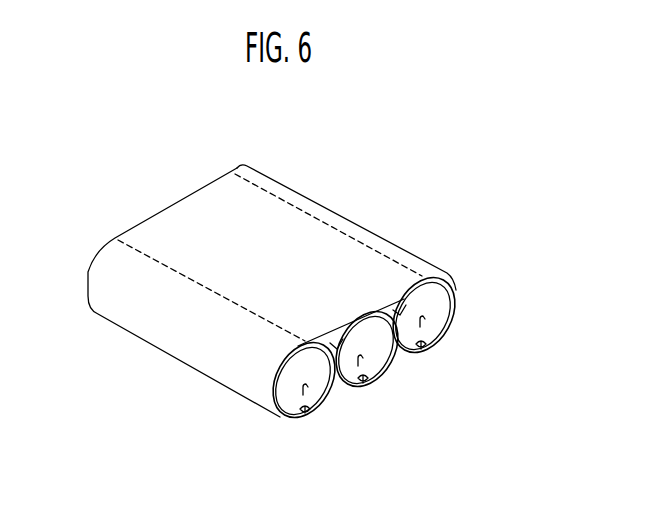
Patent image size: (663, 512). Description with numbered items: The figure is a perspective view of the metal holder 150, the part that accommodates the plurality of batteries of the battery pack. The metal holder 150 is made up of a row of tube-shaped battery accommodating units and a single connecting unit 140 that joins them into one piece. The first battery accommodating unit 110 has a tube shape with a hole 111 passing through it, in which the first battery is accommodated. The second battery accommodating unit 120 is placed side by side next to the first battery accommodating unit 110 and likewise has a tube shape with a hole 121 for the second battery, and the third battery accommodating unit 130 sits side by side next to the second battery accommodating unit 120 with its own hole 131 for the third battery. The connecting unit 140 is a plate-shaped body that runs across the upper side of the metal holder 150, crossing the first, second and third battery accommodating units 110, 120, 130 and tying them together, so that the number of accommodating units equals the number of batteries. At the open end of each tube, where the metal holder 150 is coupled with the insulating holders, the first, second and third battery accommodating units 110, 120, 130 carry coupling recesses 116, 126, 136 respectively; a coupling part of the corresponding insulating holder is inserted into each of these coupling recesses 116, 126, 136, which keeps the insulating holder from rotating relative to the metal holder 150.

The first battery accommodating unit 110 is at (222, 378).
The hole 111 is at (303, 395).
The coupling recess 116 is at (305, 413).
The second battery accommodating unit 120 is at (338, 388).
The hole 121 is at (358, 366).
The coupling recess 126 is at (364, 383).
The third battery accommodating unit 130 is at (405, 354).
The hole 131 is at (425, 322).
The coupling recess 136 is at (421, 349).
The connecting unit 140 is at (207, 210).
The metal holder 150 is at (295, 314).